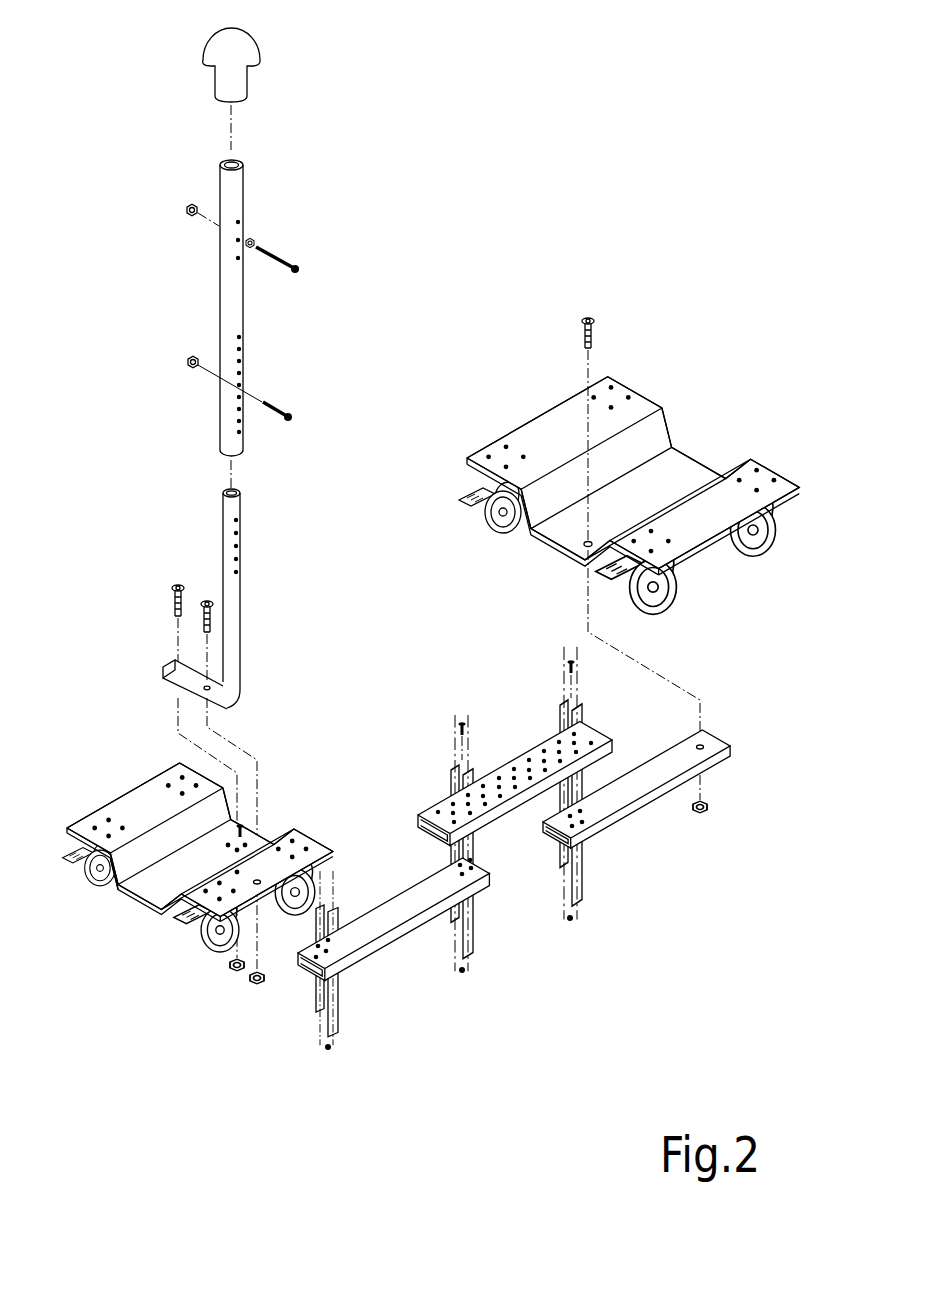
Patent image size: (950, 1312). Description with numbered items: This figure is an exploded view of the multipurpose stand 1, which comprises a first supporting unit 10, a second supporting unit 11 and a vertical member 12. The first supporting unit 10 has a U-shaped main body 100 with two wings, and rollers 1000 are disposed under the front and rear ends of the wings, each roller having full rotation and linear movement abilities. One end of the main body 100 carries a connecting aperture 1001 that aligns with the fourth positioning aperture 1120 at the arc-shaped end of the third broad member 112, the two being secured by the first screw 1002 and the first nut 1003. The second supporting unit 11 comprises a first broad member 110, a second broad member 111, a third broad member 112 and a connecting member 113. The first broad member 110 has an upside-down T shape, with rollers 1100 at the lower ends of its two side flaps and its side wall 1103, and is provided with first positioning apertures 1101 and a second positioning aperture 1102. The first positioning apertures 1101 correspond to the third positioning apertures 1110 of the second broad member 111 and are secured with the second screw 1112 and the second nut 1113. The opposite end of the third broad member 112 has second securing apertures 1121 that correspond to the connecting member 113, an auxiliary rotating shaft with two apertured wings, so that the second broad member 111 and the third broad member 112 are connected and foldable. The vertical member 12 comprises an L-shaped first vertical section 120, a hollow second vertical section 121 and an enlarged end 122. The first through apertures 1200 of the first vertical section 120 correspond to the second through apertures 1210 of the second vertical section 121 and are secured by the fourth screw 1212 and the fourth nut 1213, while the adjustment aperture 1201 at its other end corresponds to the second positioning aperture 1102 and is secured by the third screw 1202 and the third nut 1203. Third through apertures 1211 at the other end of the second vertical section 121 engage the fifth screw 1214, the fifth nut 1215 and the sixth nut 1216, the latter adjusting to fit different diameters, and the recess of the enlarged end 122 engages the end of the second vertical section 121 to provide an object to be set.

The multipurpose stand 1 is at (524, 190).
The first supporting unit 10 is at (672, 379).
The main body 100 is at (680, 420).
The rollers 1000 is at (680, 603).
The connecting aperture 1001 is at (574, 551).
The first screw 1002 is at (576, 315).
The first nut 1003 is at (709, 812).
The second supporting unit 11 is at (640, 934).
The first broad member 110 is at (148, 927).
The roller 1100 is at (80, 880).
The first positioning apertures 1101 is at (451, 874).
The second positioning aperture 1102 is at (259, 876).
The side wall 1103 is at (118, 910).
The second broad member 111 is at (514, 822).
The third positioning apertures 1110 is at (498, 777).
The second screw 1112 is at (241, 822).
The second nut 1113 is at (572, 922).
The third broad member 112 is at (670, 815).
The fourth positioning aperture 1120 is at (705, 746).
The second securing apertures 1121 is at (583, 828).
The connecting member 113 is at (376, 965).
The vertical member 12 is at (155, 403).
The first vertical section 120 is at (220, 500).
The first through apertures 1200 is at (241, 532).
The adjustment aperture 1201 is at (164, 675).
The third screw 1202 is at (170, 598).
The third nut 1203 is at (253, 993).
The second vertical section 121 is at (216, 293).
The second through apertures 1210 is at (242, 337).
The third through apertures 1211 is at (239, 216).
The fourth screw 1212 is at (274, 397).
The fourth nut 1213 is at (189, 359).
The fifth screw 1214 is at (286, 249).
The fifth nut 1215 is at (188, 203).
The sixth nut 1216 is at (254, 236).
The enlarged end 122 is at (210, 33).